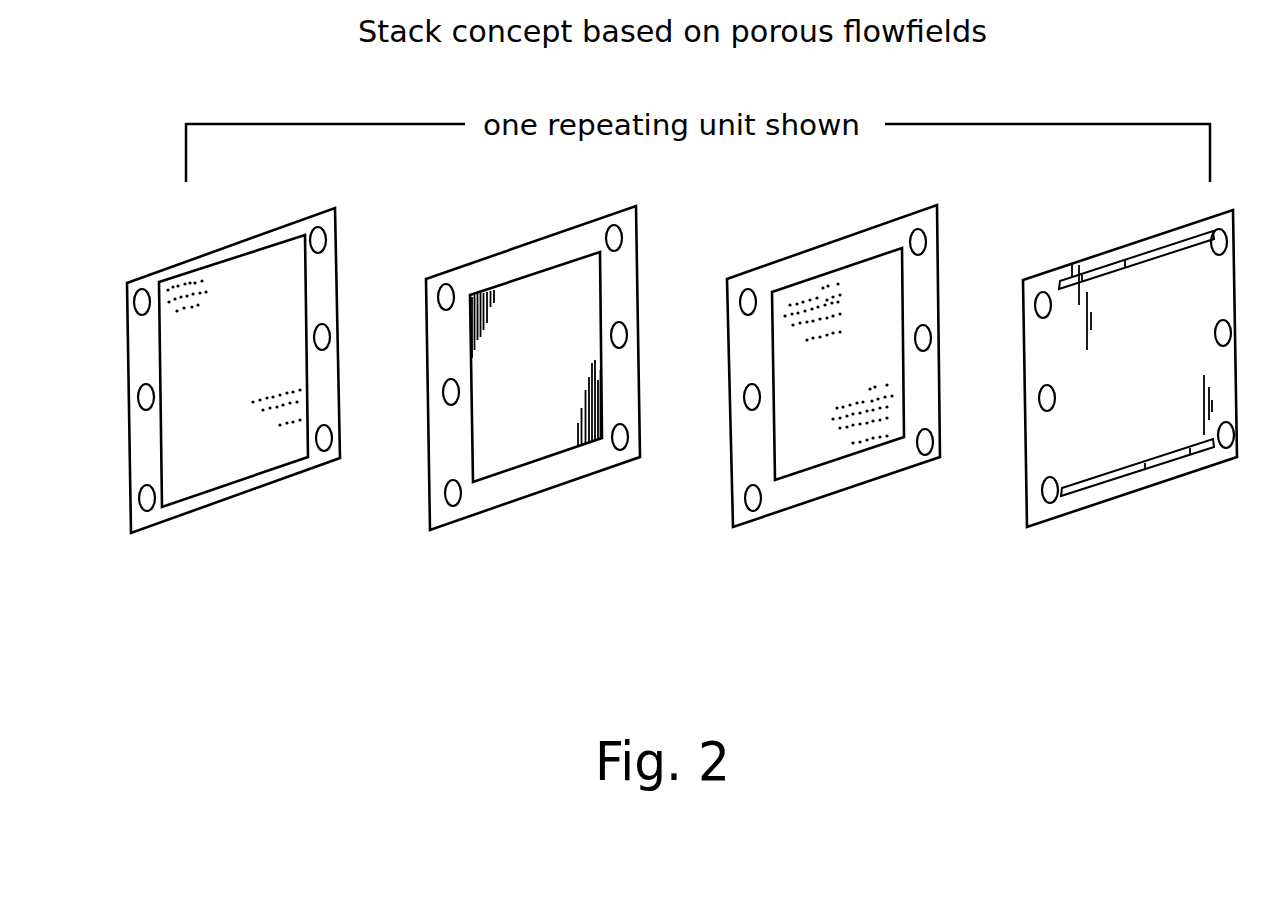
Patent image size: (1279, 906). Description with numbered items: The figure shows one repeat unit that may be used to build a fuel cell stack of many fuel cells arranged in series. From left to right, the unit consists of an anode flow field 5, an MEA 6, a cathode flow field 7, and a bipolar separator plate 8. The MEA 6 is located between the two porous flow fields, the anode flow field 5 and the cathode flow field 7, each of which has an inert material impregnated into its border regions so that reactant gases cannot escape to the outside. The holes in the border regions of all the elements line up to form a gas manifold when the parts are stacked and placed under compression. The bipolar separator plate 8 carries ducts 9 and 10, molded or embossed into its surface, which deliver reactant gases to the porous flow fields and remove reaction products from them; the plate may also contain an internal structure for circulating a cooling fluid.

The anode flow field 5 is at (233, 444).
The MEA 6 is at (533, 422).
The cathode flow field 7 is at (833, 442).
The bipolar separator plate 8 is at (1135, 445).
The duct 9 is at (1118, 262).
The duct 10 is at (1113, 480).